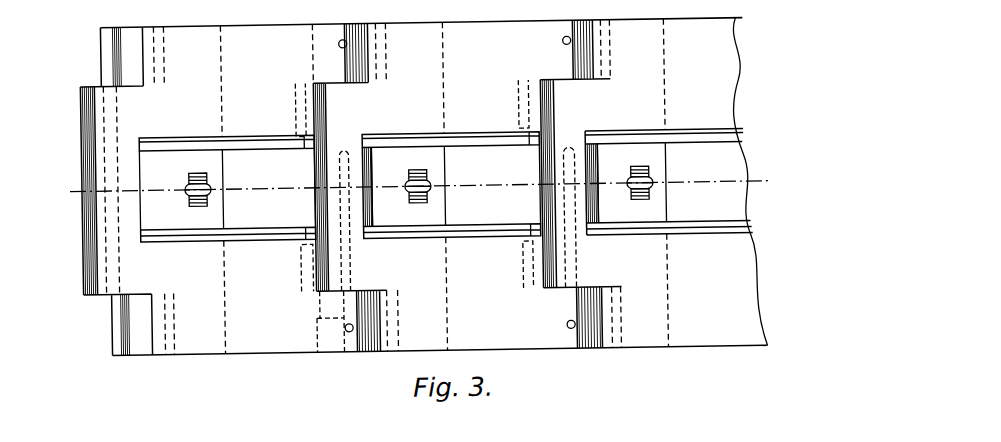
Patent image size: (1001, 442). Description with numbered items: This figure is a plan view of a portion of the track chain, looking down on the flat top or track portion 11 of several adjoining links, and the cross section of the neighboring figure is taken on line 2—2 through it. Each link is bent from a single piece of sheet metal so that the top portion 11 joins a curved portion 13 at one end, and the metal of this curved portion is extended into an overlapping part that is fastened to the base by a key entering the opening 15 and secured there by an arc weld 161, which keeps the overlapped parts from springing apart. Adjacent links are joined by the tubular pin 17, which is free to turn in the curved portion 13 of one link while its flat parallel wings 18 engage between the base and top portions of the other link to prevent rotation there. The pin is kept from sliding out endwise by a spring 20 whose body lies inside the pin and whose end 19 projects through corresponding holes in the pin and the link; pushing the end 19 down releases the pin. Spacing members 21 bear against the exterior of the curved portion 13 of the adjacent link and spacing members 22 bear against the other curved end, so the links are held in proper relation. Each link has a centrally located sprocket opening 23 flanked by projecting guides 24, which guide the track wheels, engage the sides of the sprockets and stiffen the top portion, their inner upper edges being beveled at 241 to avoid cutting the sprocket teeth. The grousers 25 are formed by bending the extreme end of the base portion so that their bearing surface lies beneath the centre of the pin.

The section line 2— 2 is at (417, 187).
The flat top or track portion 11 is at (291, 338).
The curved portion 13 is at (82, 128).
The opening 15 is at (190, 200).
The pin 17 is at (315, 34).
The flat parallel wings 18 is at (327, 340).
The end of spring 19 is at (346, 332).
The spring 20 is at (350, 274).
The spacing members 21 is at (305, 116).
The spacing members 22 is at (165, 66).
The sprocket openings 23 is at (266, 240).
The projecting guides 24 is at (250, 140).
The grousers 25 is at (454, 24).
The arc weld 161 is at (192, 180).
The beveled inner upper edges 241 is at (273, 152).